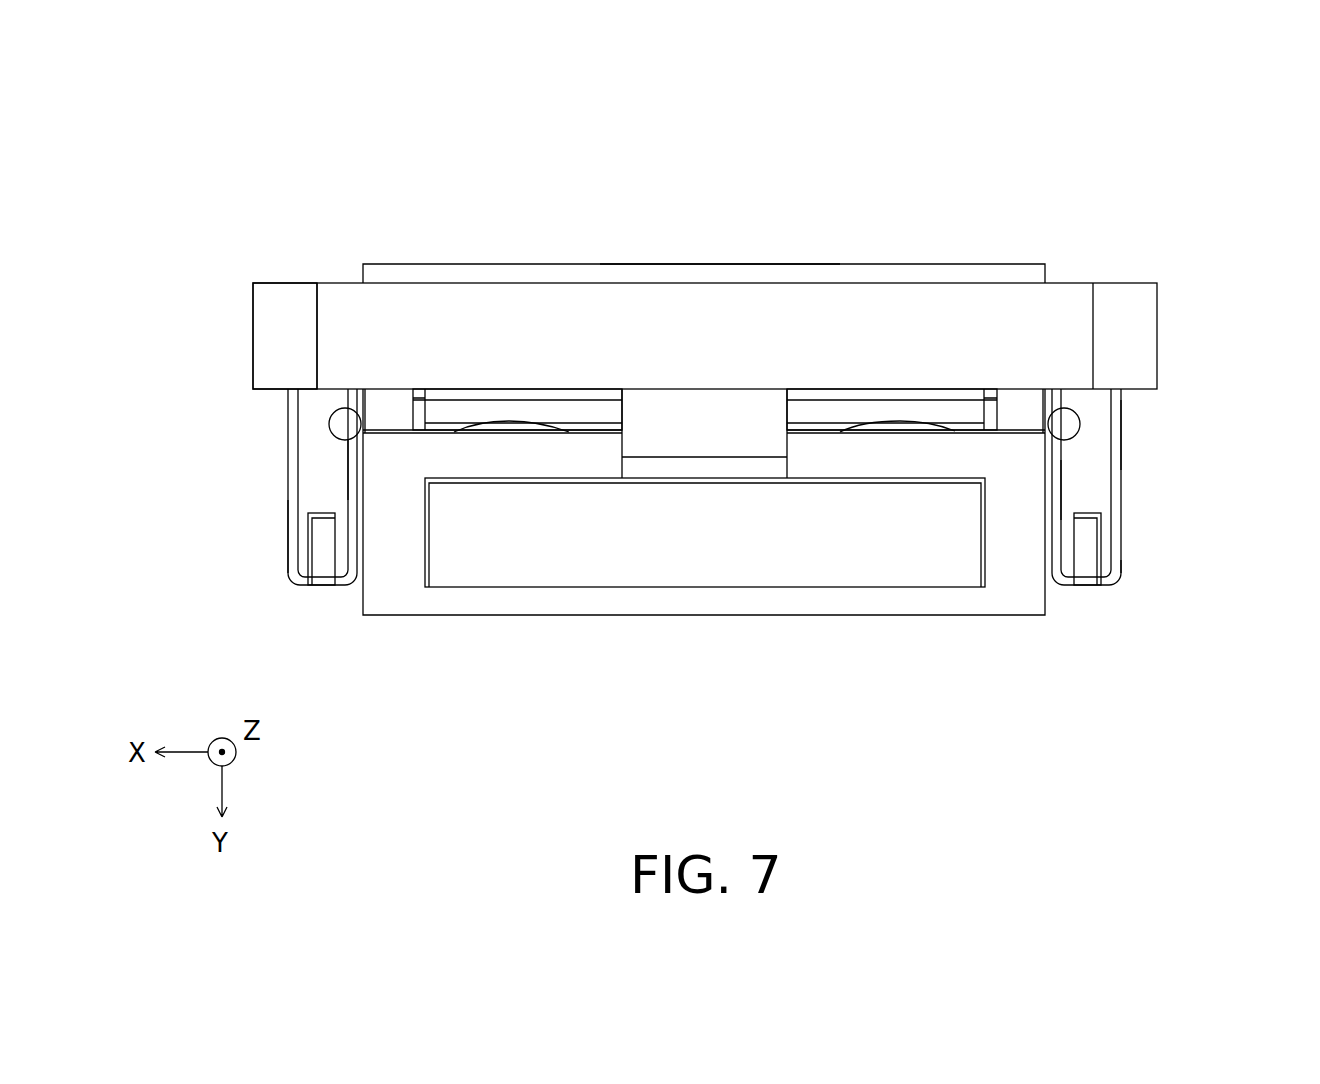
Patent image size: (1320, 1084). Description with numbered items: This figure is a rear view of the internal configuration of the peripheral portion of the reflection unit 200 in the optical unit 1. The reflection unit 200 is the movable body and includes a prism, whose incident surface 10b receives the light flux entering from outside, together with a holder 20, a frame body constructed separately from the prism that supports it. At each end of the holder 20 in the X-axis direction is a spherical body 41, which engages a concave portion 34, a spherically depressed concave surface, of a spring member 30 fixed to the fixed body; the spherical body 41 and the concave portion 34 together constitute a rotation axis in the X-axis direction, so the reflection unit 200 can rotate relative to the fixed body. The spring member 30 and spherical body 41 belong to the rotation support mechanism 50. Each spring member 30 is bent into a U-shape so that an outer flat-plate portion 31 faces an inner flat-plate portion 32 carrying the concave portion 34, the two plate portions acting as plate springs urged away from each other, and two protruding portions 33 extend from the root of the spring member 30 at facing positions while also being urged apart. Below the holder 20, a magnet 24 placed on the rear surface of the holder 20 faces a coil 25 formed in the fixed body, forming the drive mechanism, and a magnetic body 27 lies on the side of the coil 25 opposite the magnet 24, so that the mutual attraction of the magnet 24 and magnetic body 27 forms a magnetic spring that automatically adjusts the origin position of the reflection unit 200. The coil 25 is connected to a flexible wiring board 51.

The optical unit 1 is at (1167, 207).
The incident surface 10b is at (724, 252).
The holder 20 is at (1013, 410).
The reflection unit 200 is at (770, 235).
The magnet 24 is at (573, 412).
The coil 25 is at (858, 428).
The magnetic body 27 is at (592, 537).
The spring member 30 is at (288, 478).
The outer flat-plate portion 31 is at (288, 545).
The inner flat-plate portion 32 is at (345, 473).
The protruding portion 33 is at (320, 535).
The concave portion 34 is at (335, 418).
The spherical body 41 is at (365, 422).
The rotation support mechanism 50 is at (268, 595).
The flexible wiring board 51 is at (362, 328).